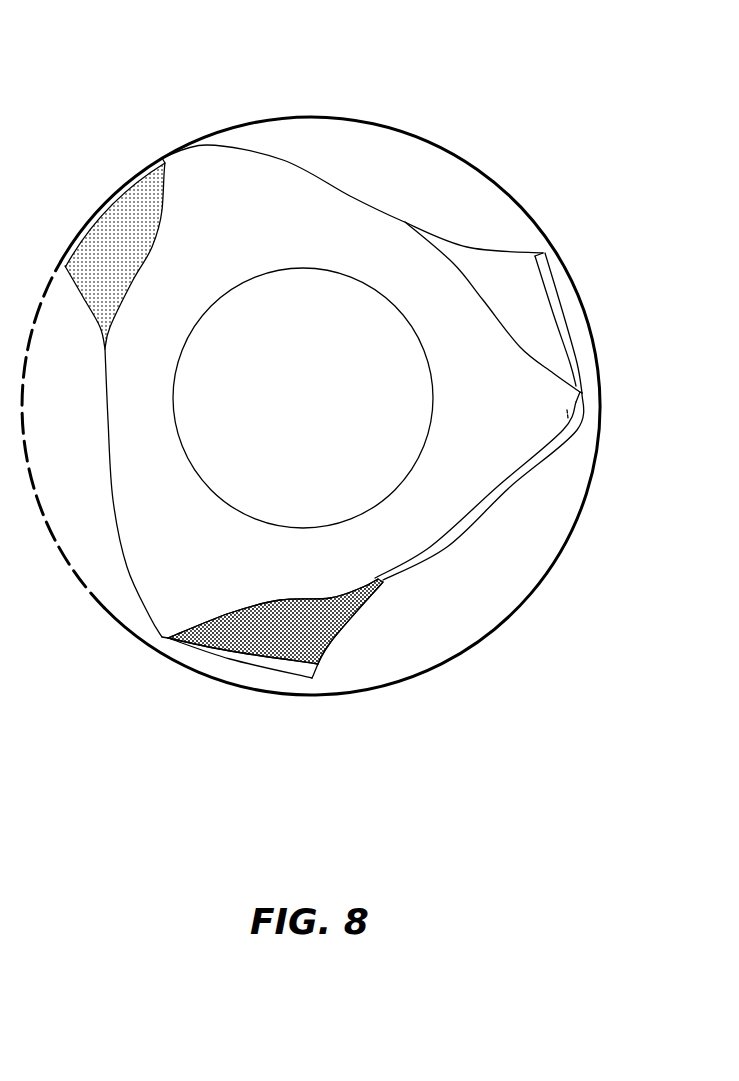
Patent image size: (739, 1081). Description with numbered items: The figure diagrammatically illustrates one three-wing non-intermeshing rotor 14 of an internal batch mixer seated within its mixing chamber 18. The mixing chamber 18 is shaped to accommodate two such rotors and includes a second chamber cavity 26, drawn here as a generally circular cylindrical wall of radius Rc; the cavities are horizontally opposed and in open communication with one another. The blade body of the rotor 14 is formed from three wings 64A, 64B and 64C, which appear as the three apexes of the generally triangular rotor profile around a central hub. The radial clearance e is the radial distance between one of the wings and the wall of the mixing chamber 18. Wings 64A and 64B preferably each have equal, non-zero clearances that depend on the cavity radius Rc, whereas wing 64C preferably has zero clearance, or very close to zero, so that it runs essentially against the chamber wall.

The mixing chamber 18 is at (507, 188).
The second chamber cavity 26 is at (415, 163).
The rotor 14 is at (530, 488).
The radial clearance e is at (575, 335).
The wing 64A is at (563, 397).
The wing 64B is at (178, 602).
The wing 64C is at (203, 170).